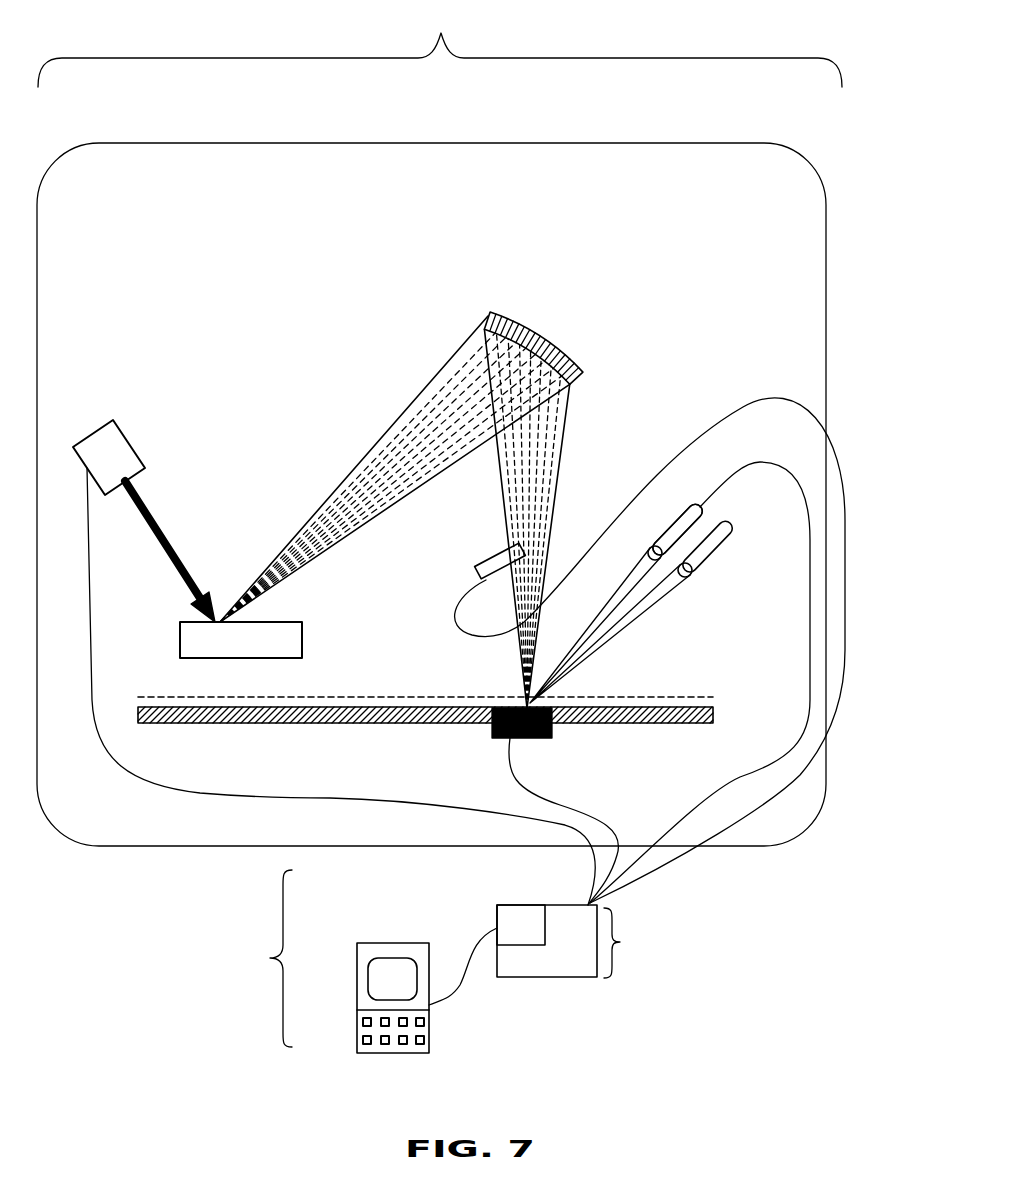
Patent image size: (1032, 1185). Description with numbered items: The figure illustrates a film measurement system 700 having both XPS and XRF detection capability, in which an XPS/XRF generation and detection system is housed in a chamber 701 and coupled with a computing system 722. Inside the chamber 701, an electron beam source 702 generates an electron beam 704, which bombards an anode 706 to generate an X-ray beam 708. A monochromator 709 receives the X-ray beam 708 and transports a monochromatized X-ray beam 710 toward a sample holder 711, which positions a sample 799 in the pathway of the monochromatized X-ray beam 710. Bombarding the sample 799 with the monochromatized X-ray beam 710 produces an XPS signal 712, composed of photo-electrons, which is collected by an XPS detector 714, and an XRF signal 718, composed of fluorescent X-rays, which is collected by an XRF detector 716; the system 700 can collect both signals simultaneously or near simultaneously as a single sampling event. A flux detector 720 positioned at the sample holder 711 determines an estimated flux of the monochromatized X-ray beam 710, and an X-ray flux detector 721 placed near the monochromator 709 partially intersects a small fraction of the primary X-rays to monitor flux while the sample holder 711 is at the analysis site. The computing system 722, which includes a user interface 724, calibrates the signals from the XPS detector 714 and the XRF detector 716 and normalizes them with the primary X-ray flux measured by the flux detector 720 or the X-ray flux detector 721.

The film measurement system 700 is at (440, 45).
The chamber 701 is at (827, 258).
The electron beam source 702 is at (117, 449).
The electron beam 704 is at (163, 535).
The anode 706 is at (250, 642).
The X-ray beam 708 is at (396, 424).
The monochromator 709 is at (543, 332).
The monochromatized X-ray beam 710 is at (568, 395).
The sample holder 711 is at (715, 715).
The XPS signal 712 is at (658, 597).
The XPS detector 714 is at (707, 553).
The XRF detector 716 is at (540, 740).
The XRF signal 718 is at (613, 617).
The flux detector 720 is at (368, 967).
The X-ray flux detector 721 is at (473, 571).
The computing system 722 is at (545, 955).
The user interface 724 is at (521, 912).
The sample 799 is at (143, 698).